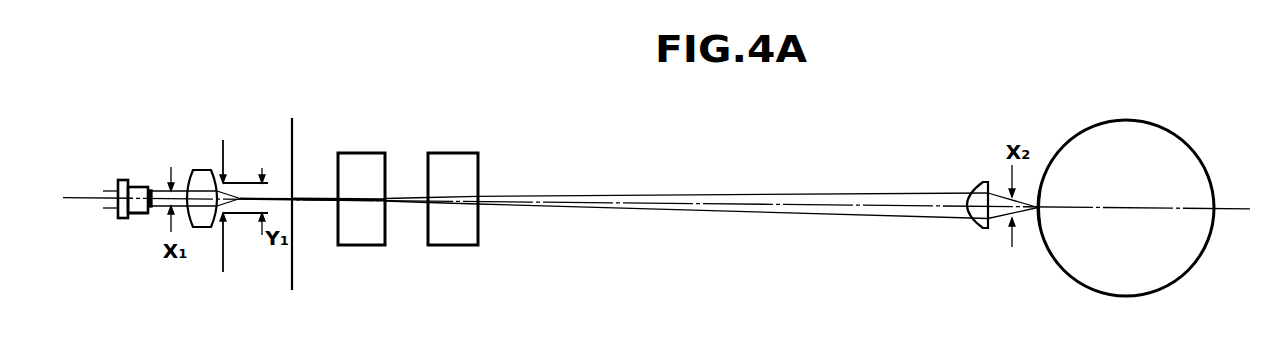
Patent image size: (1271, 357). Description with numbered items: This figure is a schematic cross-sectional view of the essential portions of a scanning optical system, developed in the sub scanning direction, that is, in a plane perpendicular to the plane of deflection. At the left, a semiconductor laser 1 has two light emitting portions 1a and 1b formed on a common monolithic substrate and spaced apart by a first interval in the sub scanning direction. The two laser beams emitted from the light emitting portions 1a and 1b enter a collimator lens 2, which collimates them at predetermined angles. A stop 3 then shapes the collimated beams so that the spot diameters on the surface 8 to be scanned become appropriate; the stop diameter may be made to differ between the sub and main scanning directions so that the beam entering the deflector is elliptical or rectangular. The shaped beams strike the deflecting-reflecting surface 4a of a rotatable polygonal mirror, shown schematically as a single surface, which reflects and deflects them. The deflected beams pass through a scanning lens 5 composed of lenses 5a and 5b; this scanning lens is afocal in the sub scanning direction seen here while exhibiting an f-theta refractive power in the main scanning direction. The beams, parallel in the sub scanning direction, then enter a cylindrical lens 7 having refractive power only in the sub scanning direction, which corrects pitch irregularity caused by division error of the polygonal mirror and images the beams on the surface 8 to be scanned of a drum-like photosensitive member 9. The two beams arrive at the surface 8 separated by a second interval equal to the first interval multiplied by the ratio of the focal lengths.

The semiconductor laser 1 is at (147, 186).
The light emitting portion 1a is at (152, 189).
The light emitting portion 1b is at (152, 213).
The collimator lens 2 is at (203, 170).
The stop 3 is at (223, 140).
The deflecting-reflecting surface 4a is at (292, 118).
The scanning lens 5 is at (415, 134).
The lens 5a is at (360, 153).
The lens 5b is at (454, 158).
The cylindrical lens 7 is at (978, 182).
The surface to be scanned 8 is at (1038, 235).
The drum-like photosensitive member 9 is at (1103, 135).